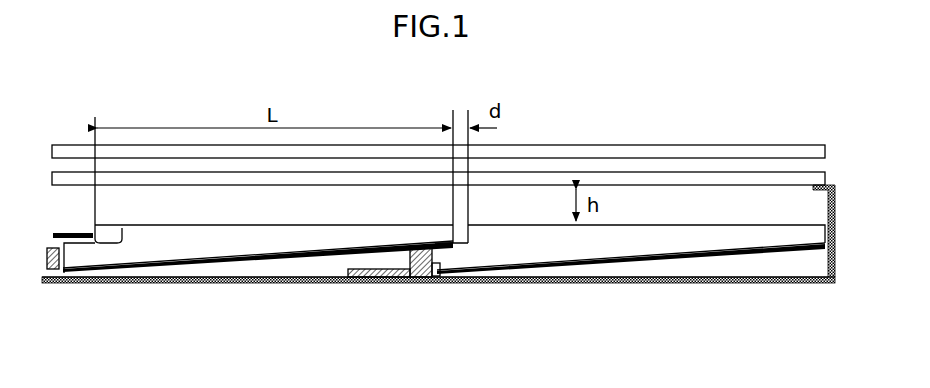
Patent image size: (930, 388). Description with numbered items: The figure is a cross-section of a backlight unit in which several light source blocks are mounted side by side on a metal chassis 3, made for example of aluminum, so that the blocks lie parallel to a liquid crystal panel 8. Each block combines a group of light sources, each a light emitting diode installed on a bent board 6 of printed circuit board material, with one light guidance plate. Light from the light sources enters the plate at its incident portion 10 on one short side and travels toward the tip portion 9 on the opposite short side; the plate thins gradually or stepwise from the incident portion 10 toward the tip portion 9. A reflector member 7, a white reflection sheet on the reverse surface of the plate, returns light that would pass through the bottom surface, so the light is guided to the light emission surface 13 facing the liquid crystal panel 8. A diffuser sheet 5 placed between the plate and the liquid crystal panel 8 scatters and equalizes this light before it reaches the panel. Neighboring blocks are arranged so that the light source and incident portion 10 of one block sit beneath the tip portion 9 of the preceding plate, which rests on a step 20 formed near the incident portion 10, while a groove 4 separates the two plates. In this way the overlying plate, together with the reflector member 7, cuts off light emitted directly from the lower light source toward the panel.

The chassis 3 is at (737, 283).
The groove 4 is at (460, 227).
The diffuser sheet 5 is at (730, 181).
The bent board 6 is at (372, 283).
The reflector member 7 is at (62, 231).
The liquid crystal panel 8 is at (648, 149).
The tip portion 9 is at (443, 236).
The incident portion 10 is at (66, 252).
The light emission surface 13 is at (278, 223).
The step 20 is at (121, 229).